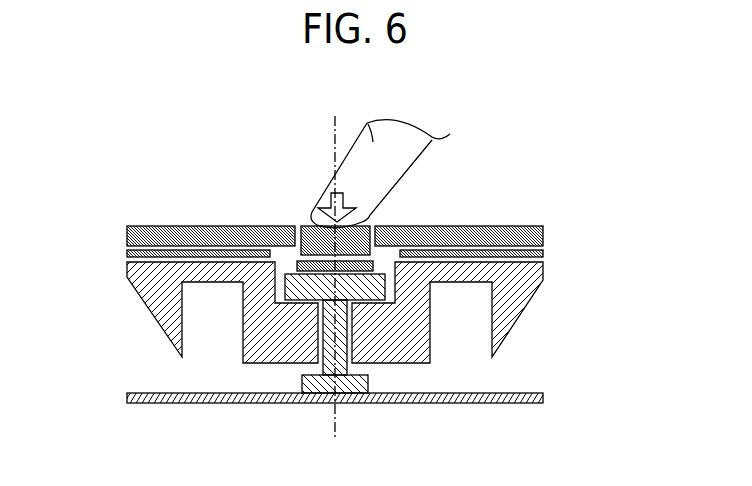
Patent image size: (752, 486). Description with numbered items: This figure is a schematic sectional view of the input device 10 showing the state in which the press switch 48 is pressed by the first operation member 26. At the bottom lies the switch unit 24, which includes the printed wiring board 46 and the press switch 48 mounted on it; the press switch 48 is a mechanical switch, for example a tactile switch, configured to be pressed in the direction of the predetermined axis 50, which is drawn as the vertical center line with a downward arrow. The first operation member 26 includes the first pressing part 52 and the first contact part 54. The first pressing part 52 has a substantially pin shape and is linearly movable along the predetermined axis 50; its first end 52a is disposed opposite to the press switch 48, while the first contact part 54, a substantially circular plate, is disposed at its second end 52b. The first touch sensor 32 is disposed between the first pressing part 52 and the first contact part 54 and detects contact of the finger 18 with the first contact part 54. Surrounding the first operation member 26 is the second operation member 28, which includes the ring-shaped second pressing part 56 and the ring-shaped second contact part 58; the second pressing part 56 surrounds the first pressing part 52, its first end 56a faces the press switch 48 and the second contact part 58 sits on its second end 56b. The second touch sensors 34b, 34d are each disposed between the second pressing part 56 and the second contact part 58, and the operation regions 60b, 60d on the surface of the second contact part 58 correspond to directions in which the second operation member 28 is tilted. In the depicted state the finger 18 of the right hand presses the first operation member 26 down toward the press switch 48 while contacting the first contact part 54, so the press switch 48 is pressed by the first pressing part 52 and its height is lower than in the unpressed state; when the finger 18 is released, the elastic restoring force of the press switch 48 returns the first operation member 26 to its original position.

The input device 10 is at (353, 287).
The finger 18 is at (370, 138).
The switch unit 24 is at (335, 421).
The first operation member 26 is at (355, 301).
The second operation member 28 is at (353, 238).
The first touch sensor 32 is at (317, 261).
The second touch sensor 34b is at (178, 250).
The second touch sensor 34d is at (498, 250).
The printed wiring board 46 is at (363, 395).
The press switch 48 is at (338, 382).
The predetermined axis 50 is at (333, 133).
The first pressing part 52 is at (333, 304).
The first end 52a is at (326, 337).
The second end 52b is at (297, 273).
The first contact part 54 is at (352, 232).
The second pressing part 56 is at (332, 311).
The first end 56a is at (417, 352).
The second end 56b is at (150, 272).
The second contact part 58 is at (375, 180).
The operation region 60b is at (207, 226).
The operation region 60d is at (490, 226).